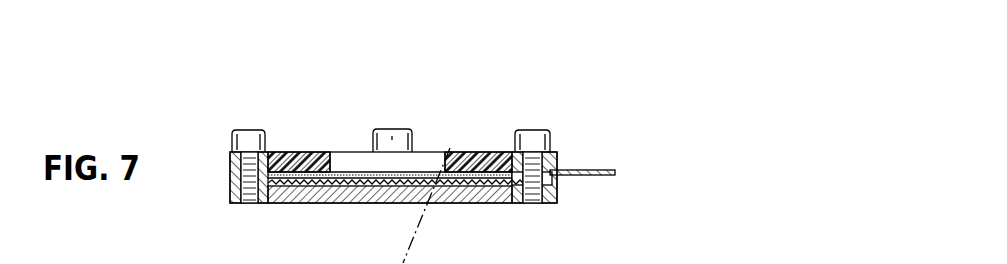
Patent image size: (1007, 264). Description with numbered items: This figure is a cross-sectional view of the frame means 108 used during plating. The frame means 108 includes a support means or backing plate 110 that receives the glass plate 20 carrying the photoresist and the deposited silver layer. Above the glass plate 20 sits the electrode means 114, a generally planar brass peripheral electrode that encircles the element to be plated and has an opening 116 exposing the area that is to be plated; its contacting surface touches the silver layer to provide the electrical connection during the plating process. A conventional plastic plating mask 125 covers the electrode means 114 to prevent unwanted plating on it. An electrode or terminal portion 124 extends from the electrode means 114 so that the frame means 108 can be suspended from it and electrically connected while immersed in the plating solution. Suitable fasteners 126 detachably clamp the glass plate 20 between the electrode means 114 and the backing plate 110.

The frame means 108 is at (573, 127).
The backing plate 110 is at (500, 195).
The glass plate 20 is at (340, 184).
The opening 116 is at (345, 157).
The plastic plating mask 125 is at (285, 155).
The electrode means 114 is at (468, 157).
The terminal portion 124 is at (605, 170).
The fasteners 126 is at (240, 130).